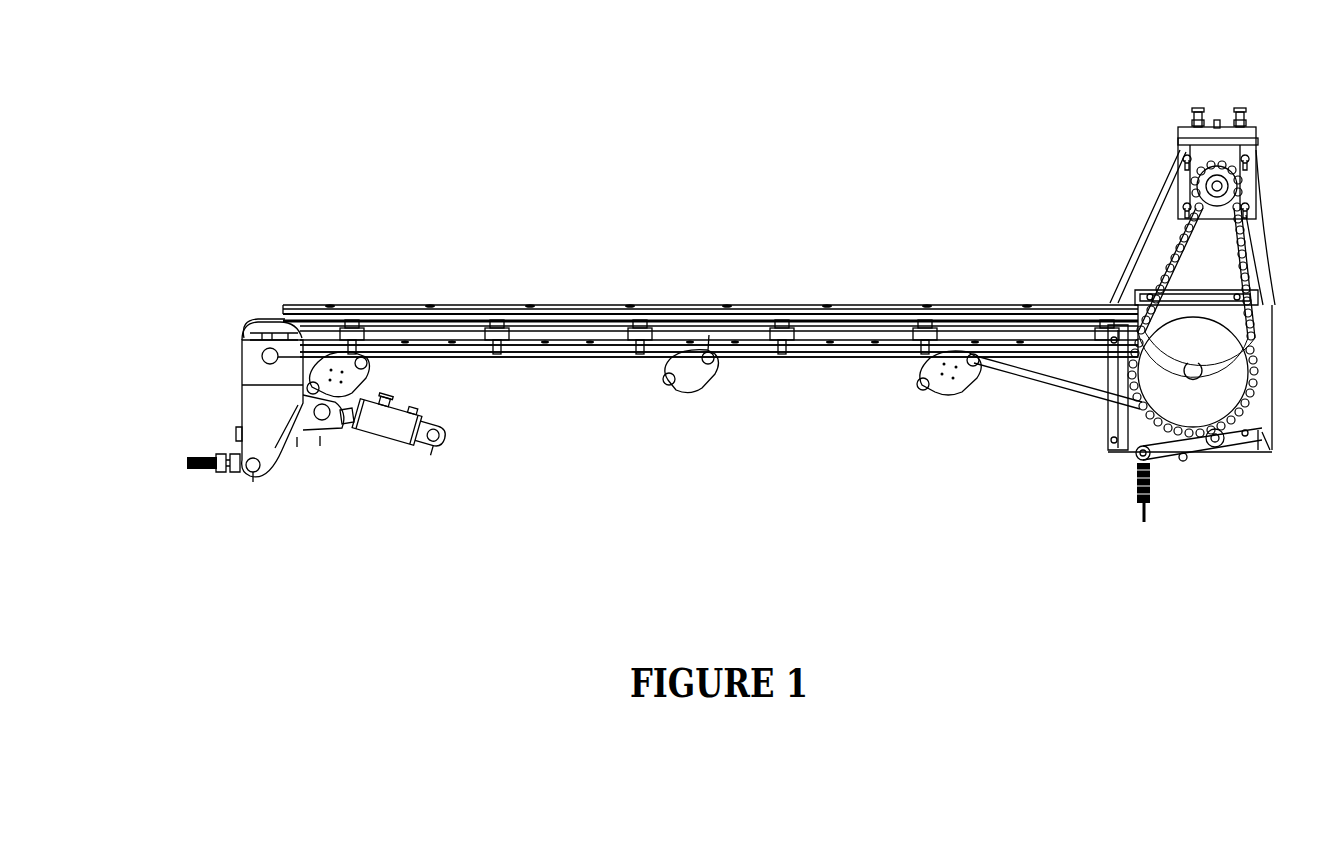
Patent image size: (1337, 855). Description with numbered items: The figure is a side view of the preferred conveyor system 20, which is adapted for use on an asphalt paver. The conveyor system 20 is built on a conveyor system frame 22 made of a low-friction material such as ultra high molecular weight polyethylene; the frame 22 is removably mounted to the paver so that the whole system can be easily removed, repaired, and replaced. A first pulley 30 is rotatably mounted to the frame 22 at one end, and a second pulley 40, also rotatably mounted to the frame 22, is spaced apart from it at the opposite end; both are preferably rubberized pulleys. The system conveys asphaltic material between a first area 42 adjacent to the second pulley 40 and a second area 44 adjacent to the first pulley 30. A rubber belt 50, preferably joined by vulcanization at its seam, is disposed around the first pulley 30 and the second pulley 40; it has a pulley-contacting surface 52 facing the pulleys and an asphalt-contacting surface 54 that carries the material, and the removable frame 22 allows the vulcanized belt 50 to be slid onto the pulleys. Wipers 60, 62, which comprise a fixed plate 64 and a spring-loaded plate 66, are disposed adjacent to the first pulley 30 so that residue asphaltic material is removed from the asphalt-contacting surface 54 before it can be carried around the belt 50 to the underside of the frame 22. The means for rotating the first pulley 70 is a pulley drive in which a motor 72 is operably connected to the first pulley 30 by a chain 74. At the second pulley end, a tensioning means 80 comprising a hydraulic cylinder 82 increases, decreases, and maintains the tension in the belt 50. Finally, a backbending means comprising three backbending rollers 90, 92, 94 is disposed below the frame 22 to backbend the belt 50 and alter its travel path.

The conveyor system 20 is at (605, 258).
The conveyor system frame 22 is at (1025, 340).
The first pulley 30 is at (1205, 375).
The second pulley 40 is at (270, 358).
The first area 42 is at (267, 283).
The second area 44 is at (1105, 243).
The belt 50 is at (245, 336).
The pulley-contacting surface 52 is at (397, 357).
The asphalt-contacting surface 54 is at (597, 357).
The wiper 60 is at (1247, 460).
The wiper 62 is at (1200, 470).
The fixed plate 64 is at (1262, 447).
The spring-loaded plate 66 is at (1182, 458).
The means for rotating the first pulley 70 is at (1276, 240).
The motor 72 is at (1258, 152).
The chain 74 is at (1265, 318).
The tensioning means 80 is at (355, 455).
The hydraulic cylinder 82 is at (405, 455).
The backbending roller 90 is at (365, 383).
The backbending roller 92 is at (689, 395).
The backbending roller 94 is at (932, 393).